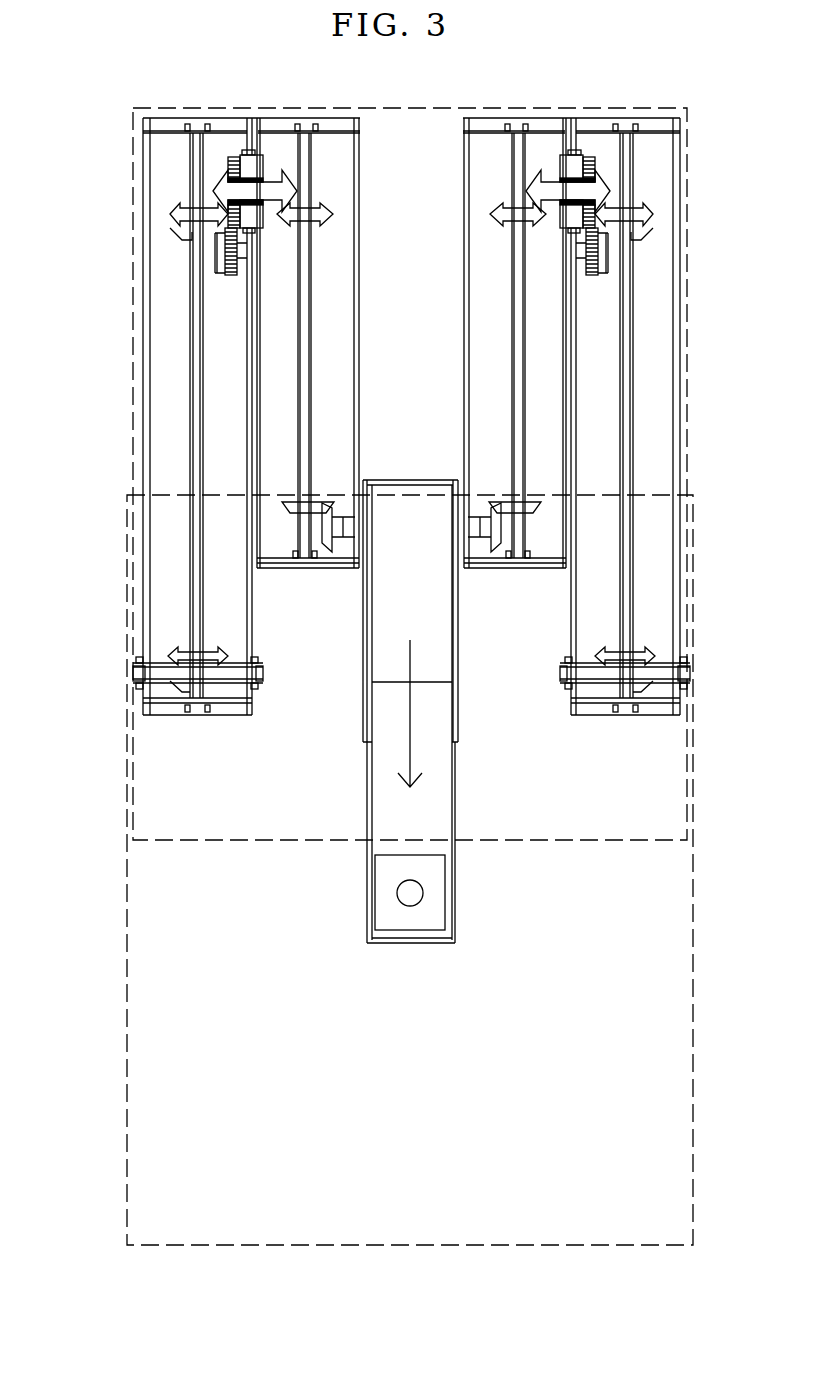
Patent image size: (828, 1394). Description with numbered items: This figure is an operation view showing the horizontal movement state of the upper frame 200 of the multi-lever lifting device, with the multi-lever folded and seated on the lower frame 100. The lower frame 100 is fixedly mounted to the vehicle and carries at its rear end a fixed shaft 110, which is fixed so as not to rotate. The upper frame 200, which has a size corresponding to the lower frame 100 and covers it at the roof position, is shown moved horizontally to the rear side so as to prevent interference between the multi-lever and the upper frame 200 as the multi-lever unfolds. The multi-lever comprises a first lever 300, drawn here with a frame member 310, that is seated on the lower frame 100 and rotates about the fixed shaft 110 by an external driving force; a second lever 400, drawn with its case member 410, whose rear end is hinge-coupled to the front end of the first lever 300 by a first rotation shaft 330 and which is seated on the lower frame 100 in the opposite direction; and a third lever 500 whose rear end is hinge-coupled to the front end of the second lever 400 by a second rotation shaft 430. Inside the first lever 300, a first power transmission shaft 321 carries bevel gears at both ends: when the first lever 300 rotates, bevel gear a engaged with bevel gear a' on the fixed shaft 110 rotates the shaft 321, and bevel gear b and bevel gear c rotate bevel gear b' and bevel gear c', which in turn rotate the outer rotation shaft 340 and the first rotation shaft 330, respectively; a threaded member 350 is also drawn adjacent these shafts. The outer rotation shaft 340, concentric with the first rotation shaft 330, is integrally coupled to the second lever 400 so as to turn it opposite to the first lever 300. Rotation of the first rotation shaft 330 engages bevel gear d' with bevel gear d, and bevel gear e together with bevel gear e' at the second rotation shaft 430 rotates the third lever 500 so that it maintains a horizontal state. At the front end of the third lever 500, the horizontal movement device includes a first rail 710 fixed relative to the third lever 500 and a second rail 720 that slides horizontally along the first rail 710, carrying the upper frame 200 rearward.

The lower frame 100 is at (133, 788).
The upper frame 200 is at (127, 1067).
The fixed shaft 110 is at (210, 678).
The first lever 300 is at (150, 352).
The guide frame wall 310 is at (143, 486).
The first power transmission shaft 321 is at (197, 418).
The first rotation shaft 330 is at (270, 186).
The outer rotation shaft 340 is at (252, 225).
The lead screw 350 is at (233, 268).
The second lever 400 is at (346, 343).
The transfer frame 410 is at (360, 275).
The second rotation shaft 430 is at (347, 538).
The third lever 500 is at (480, 718).
The first rail 710 is at (458, 627).
The second rail 720 is at (457, 925).
The bevel gear a is at (220, 648).
The bevel gear a' is at (152, 701).
The bevel gear b is at (150, 236).
The bevel gear b' is at (223, 282).
The bevel gear c is at (167, 214).
The bevel gear c' is at (201, 191).
The bevel gear d is at (319, 345).
The bevel gear d' is at (305, 250).
The bevel gear e is at (279, 504).
The bevel gear e' is at (322, 504).